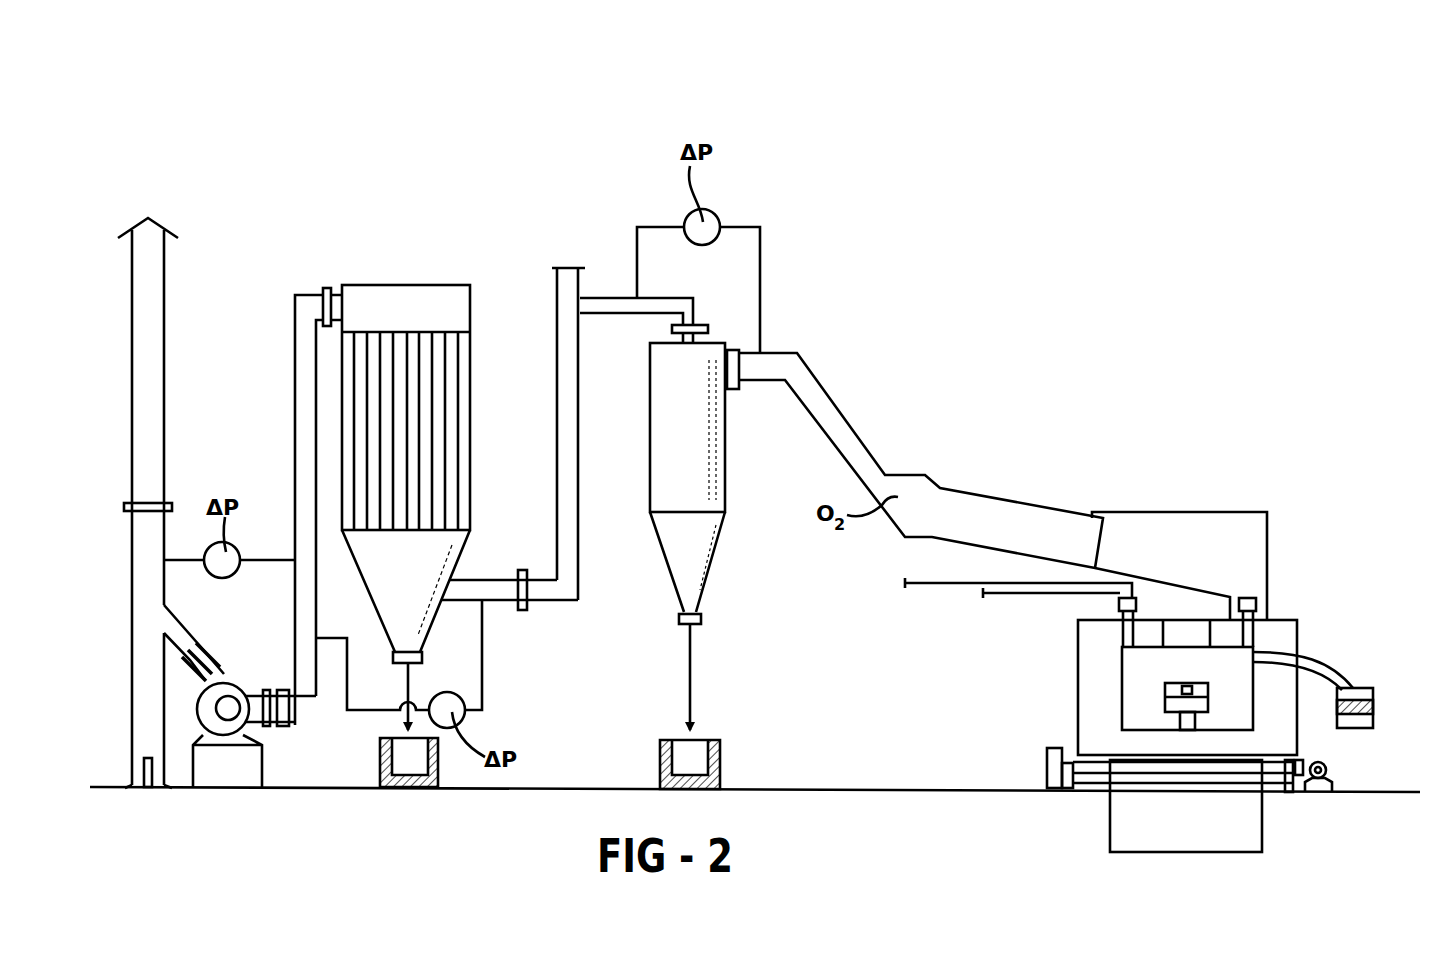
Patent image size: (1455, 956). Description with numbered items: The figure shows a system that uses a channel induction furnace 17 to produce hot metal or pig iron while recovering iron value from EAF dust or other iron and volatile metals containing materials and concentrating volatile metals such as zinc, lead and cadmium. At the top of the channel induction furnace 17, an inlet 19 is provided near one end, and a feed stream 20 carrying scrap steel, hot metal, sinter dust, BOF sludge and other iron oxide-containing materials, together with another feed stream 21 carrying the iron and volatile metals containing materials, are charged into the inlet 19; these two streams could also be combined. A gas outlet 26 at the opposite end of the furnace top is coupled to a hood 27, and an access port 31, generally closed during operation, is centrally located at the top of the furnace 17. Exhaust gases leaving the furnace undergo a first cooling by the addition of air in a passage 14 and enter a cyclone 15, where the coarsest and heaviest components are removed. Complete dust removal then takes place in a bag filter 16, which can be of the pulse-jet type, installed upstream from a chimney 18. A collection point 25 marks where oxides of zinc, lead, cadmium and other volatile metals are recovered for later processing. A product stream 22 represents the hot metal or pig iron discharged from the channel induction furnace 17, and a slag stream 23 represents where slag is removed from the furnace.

The passage 14 is at (975, 460).
The cyclone 15 is at (710, 452).
The bag filter 16 is at (450, 419).
The channel induction furnace 17 is at (1162, 700).
The chimney 18 is at (157, 424).
The inlet 19 is at (1118, 605).
The feed stream 20 is at (985, 594).
The feed stream 21 is at (940, 585).
The product stream 22 is at (1216, 700).
The slag stream 23 is at (1373, 710).
The collection point 25 is at (400, 758).
The gas outlet 26 is at (1248, 598).
The hood 27 is at (1170, 526).
The access port 31 is at (1183, 630).